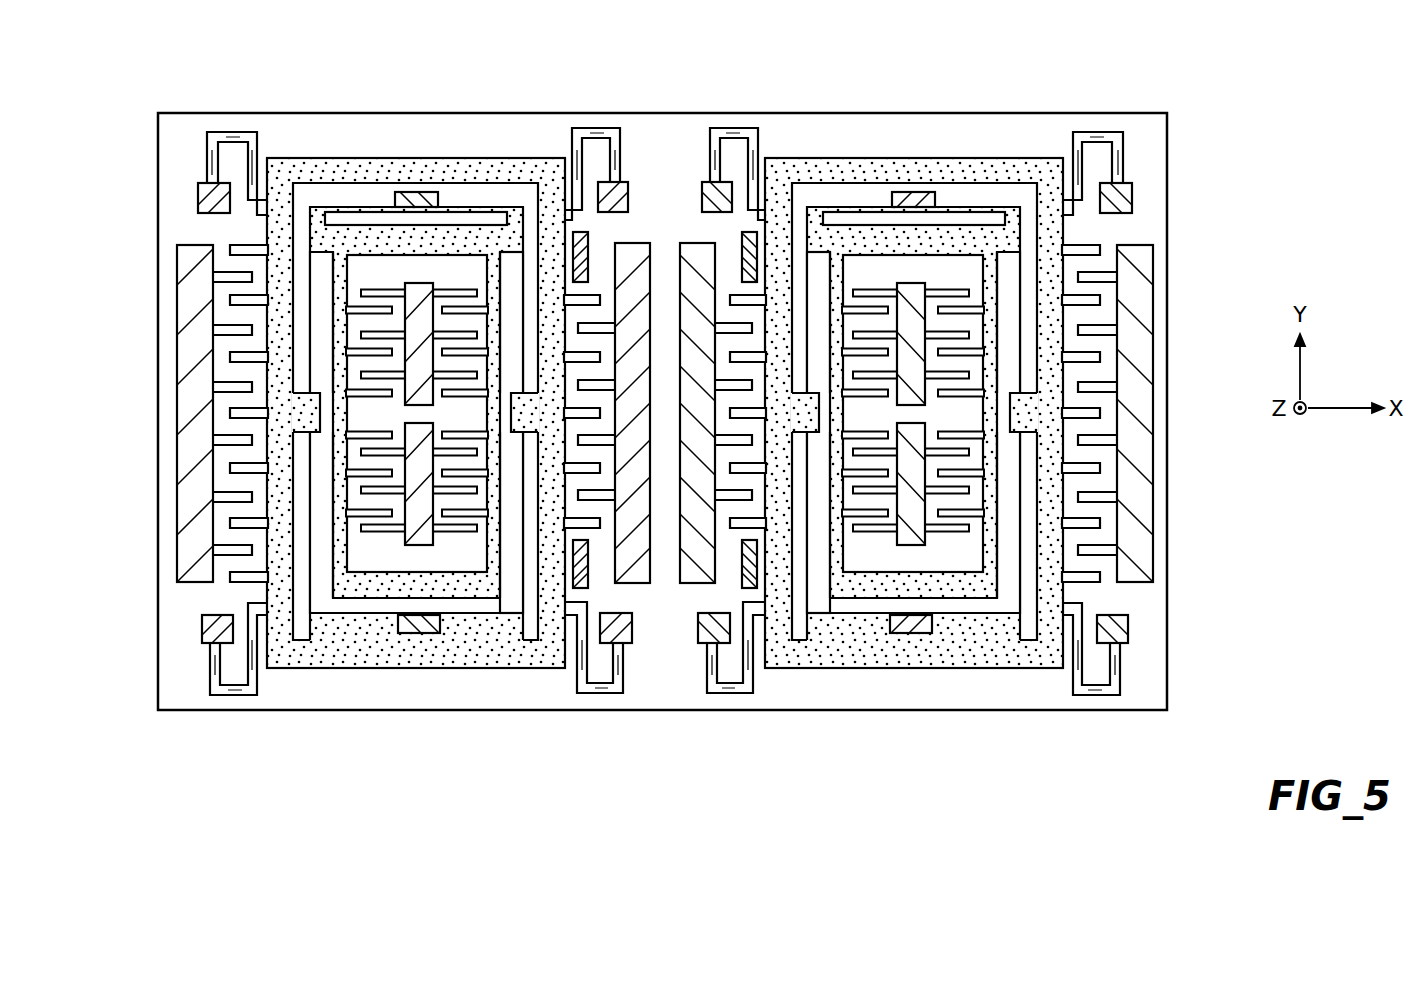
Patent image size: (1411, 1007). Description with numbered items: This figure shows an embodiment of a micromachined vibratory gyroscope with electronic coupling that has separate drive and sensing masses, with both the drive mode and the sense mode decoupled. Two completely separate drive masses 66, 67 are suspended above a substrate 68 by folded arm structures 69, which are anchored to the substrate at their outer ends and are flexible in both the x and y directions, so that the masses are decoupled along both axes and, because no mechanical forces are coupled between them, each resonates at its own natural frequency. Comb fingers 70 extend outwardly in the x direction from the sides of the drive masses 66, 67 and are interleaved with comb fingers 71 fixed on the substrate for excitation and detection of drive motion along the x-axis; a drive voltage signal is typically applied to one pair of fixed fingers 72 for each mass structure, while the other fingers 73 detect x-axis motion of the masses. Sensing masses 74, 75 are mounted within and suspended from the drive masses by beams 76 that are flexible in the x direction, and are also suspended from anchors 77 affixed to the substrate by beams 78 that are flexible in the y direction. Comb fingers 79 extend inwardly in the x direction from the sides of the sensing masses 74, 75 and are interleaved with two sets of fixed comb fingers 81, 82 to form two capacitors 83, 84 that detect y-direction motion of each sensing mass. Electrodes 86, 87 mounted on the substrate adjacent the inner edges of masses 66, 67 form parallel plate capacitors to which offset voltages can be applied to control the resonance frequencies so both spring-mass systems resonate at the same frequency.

The drive mass 66 is at (416, 489).
The drive mass 67 is at (914, 489).
The substrate 68 is at (680, 222).
The folded arm structures 69 is at (660, 413).
The comb fingers 70 is at (660, 376).
The comb fingers 71 is at (663, 505).
The comb fingers 72 is at (661, 413).
The comb fingers 73 is at (665, 435).
The sensing mass 74 is at (416, 323).
The sensing mass 75 is at (913, 323).
The beams 76 is at (661, 425).
The anchors 77 is at (669, 413).
The beams 78 is at (664, 413).
The comb fingers 79 is at (665, 411).
The comb fingers 81 is at (665, 331).
The comb fingers 82 is at (665, 495).
The capacitor 83 is at (665, 161).
The capacitor 84 is at (665, 665).
The electrode 86 is at (517, 410).
The electrode 87 is at (815, 410).